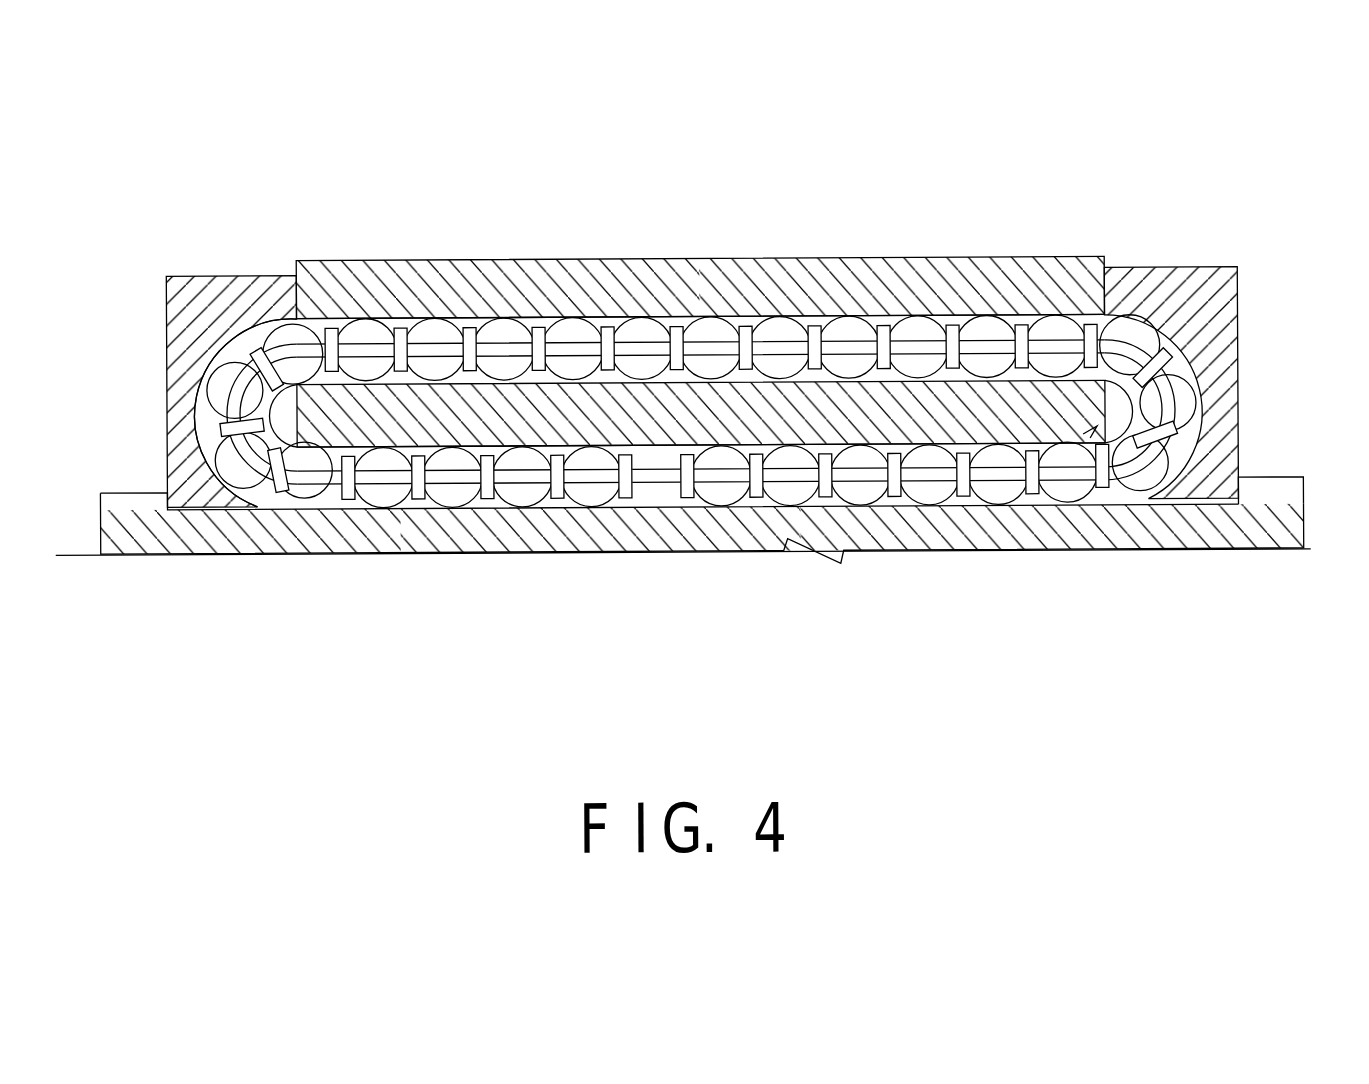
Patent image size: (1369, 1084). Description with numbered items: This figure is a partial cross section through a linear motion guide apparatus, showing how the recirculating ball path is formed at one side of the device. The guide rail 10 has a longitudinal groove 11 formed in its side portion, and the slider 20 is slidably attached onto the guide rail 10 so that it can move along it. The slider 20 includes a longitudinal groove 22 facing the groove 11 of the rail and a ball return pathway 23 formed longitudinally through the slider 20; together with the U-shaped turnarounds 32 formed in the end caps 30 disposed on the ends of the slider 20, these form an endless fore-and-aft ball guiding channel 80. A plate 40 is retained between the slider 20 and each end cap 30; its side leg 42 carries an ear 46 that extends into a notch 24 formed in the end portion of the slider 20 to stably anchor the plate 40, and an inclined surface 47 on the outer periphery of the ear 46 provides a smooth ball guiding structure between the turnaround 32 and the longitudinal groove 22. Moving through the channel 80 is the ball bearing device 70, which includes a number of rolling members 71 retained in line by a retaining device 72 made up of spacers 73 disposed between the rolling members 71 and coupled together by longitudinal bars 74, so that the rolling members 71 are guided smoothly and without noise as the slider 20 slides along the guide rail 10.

The guide rail 10 is at (1245, 537).
The longitudinal groove 11 is at (1290, 483).
The slider 20 is at (737, 287).
The longitudinal groove 22 is at (768, 447).
The ball return pathway 23 is at (572, 324).
The notch 24 is at (327, 432).
The end cap 30 is at (237, 293).
The turnaround 32 is at (1170, 352).
The plate 40 is at (1122, 413).
The side leg 42 is at (283, 410).
The ear 46 is at (1083, 436).
The inclined surface 47 is at (1113, 442).
The ball bearing device 70 is at (932, 497).
The rolling member 71 is at (1052, 330).
The retaining device 72 is at (1125, 345).
The spacer 73 is at (555, 497).
The longitudinal bar 74 is at (845, 345).
The ball guiding channel 80 is at (653, 502).